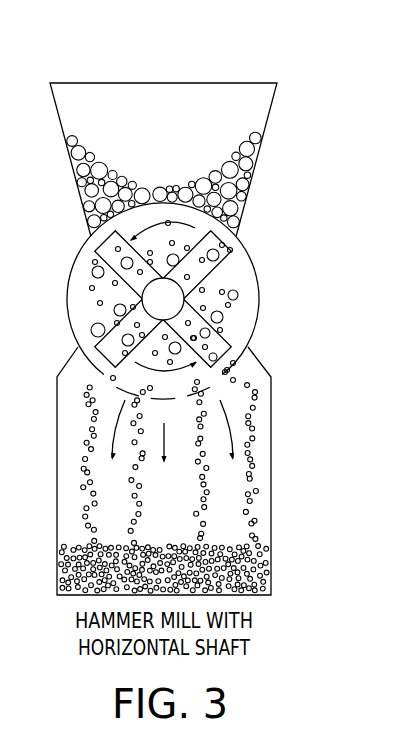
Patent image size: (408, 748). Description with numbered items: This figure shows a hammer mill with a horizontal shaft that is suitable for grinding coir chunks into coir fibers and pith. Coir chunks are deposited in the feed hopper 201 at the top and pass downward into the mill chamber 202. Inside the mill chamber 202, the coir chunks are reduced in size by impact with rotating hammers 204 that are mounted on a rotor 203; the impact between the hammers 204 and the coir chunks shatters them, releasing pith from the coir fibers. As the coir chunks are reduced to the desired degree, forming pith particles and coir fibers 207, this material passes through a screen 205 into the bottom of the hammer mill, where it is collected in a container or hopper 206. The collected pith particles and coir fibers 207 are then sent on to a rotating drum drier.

The feed hopper 201 is at (243, 78).
The mill chamber 202 is at (195, 225).
The rotor 203 is at (167, 296).
The rotating hammers 204 is at (224, 331).
The screen 205 is at (222, 389).
The container or hopper 206 is at (272, 473).
The pith particles and coir fibers 207 is at (278, 570).